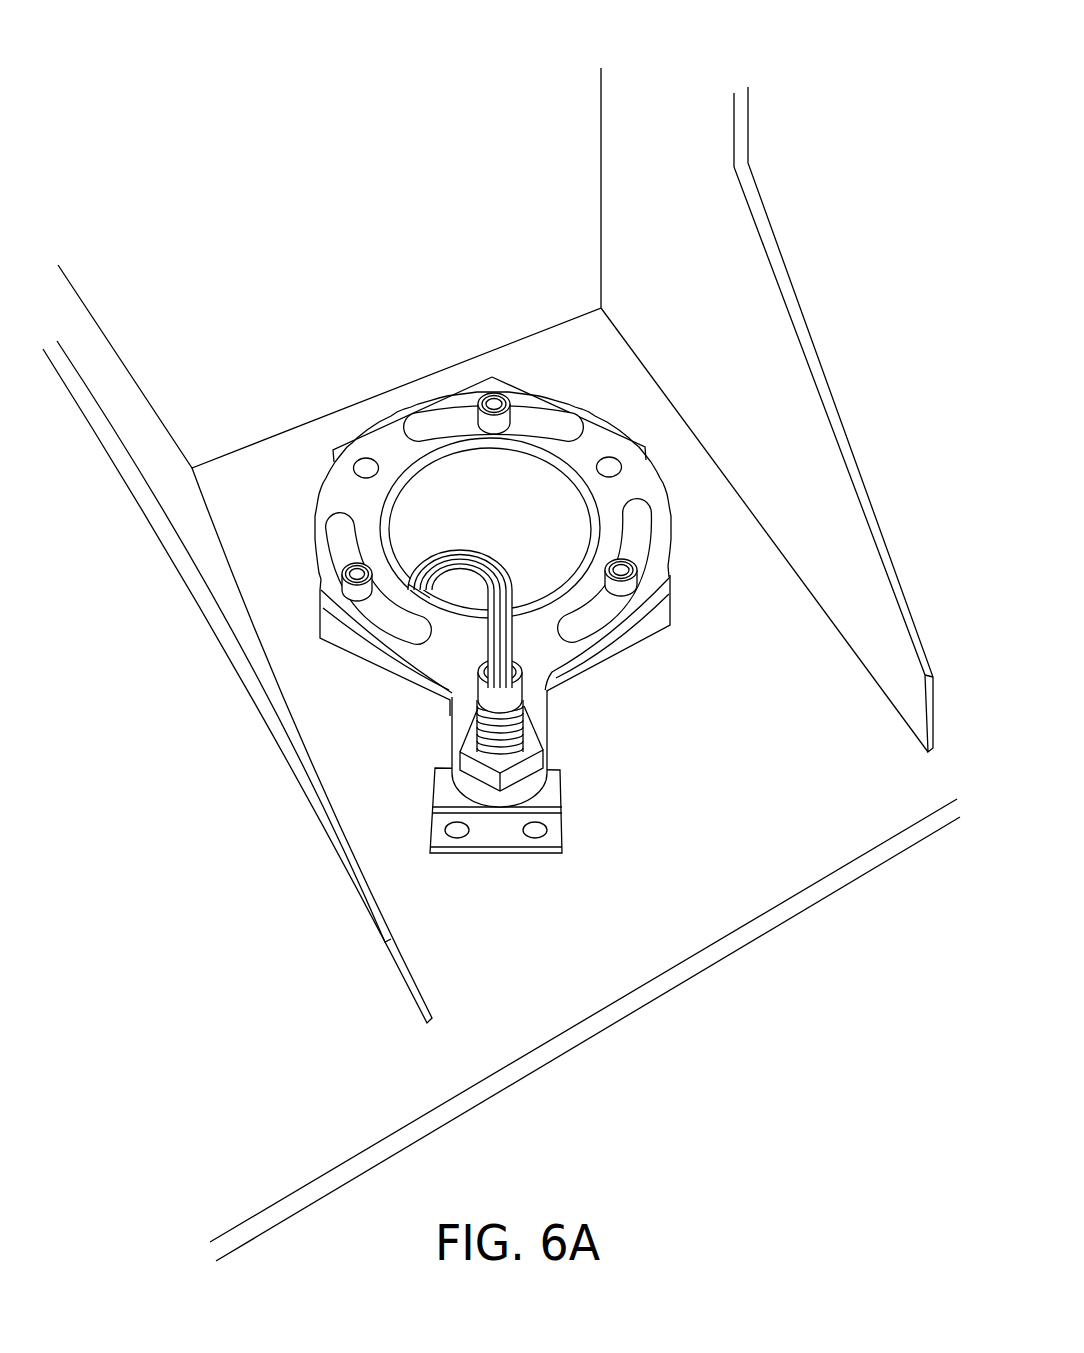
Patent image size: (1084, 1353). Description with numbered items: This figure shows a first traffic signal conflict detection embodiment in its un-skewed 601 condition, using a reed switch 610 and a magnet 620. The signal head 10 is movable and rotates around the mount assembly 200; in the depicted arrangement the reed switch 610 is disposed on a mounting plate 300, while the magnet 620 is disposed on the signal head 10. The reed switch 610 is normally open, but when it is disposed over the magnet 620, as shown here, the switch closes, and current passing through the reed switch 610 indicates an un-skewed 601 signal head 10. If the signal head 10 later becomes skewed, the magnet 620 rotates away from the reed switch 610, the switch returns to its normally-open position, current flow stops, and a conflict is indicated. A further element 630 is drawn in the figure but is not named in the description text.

The signal head 10 is at (93, 363).
The mount assembly 200 is at (490, 320).
The mounting plate 300 is at (585, 455).
The un-skewed signal head 601 is at (425, 85).
The reed switch 610 is at (472, 730).
The magnet 620 is at (552, 795).
The tube 630 is at (463, 553).